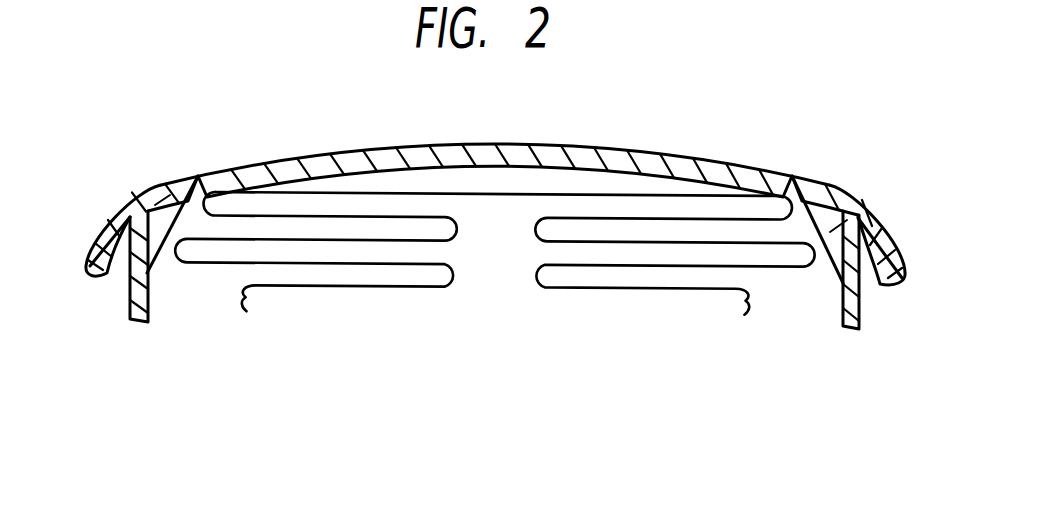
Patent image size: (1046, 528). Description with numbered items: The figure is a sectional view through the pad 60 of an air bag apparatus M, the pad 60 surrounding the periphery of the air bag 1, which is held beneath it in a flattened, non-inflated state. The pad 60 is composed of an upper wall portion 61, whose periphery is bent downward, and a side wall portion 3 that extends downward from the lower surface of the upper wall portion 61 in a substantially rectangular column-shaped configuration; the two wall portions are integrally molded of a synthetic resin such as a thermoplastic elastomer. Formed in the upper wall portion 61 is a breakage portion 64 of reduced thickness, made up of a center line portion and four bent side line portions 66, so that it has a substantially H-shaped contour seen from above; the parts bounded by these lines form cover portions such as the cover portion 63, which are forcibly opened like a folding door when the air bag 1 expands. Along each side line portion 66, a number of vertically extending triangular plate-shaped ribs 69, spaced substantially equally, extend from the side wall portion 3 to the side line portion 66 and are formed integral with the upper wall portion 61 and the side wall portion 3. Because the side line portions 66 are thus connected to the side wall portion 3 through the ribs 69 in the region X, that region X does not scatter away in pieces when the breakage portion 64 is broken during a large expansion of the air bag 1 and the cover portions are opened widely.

The air bag 1 is at (406, 192).
The side wall portion 3 is at (138, 288).
The pad 60 is at (633, 140).
The upper wall portion 61 is at (485, 144).
The cover portion 63 is at (493, 153).
The breakage portion 64 is at (495, 180).
The side line portion 66 is at (198, 175).
The triangular plate-shaped rib 69 is at (148, 206).
The region X is at (160, 180).
The air bag apparatus M is at (648, 332).